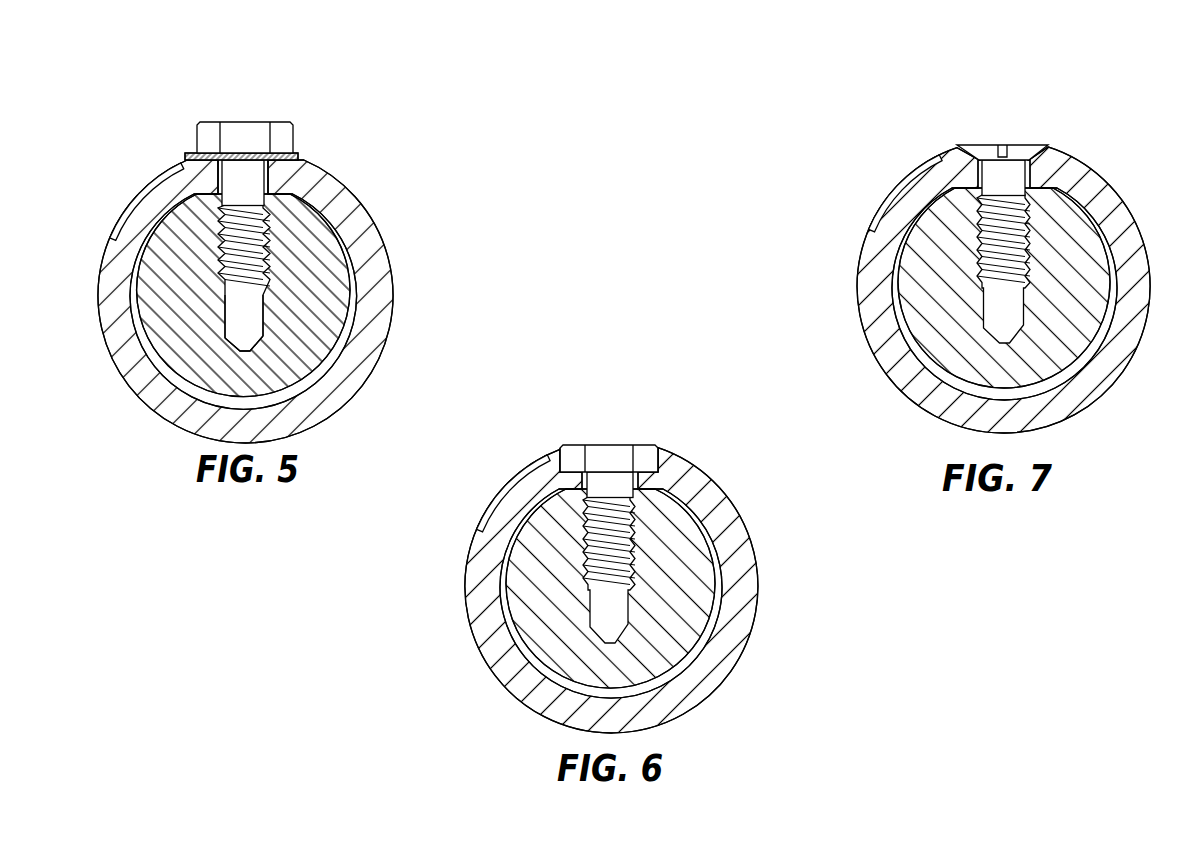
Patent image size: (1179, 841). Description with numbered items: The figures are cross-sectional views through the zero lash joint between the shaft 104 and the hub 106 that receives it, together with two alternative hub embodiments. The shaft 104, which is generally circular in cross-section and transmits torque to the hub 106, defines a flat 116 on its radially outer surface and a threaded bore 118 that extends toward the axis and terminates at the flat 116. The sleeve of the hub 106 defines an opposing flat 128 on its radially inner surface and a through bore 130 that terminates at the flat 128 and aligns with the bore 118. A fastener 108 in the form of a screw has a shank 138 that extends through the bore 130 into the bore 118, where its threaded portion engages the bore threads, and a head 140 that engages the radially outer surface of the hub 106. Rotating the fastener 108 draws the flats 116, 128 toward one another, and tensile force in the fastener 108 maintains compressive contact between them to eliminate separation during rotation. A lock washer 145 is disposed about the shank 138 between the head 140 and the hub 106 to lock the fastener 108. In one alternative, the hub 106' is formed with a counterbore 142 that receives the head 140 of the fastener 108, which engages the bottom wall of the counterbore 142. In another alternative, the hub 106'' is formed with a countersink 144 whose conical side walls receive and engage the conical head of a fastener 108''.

In FIG. 5, the shaft 104 is at (307, 333).
In FIG. 6, the shaft 104 is at (535, 637).
In FIG. 7, the shaft 104 is at (930, 332).
In FIG. 5, the hub 106 is at (283, 301).
In FIG. 6, the hub 106' is at (597, 590).
In FIG. 7, the hub 106'' is at (996, 296).
In FIG. 5, the fastener 108 is at (286, 233).
In FIG. 6, the fastener 108 is at (662, 542).
In FIG. 7, the fastener 108'' is at (1051, 240).
In FIG. 5, the flat 116 is at (282, 178).
In FIG. 5, the threaded bore 118 is at (239, 306).
In FIG. 5, the flat 128 is at (217, 198).
In FIG. 5, the through bore 130 is at (176, 158).
In FIG. 5, the shank 138 is at (250, 232).
In FIG. 5, the head 140 is at (252, 128).
In FIG. 6, the head 140 is at (617, 444).
In FIG. 6, the counterbore 142 is at (565, 446).
In FIG. 7, the countersink 144 is at (986, 144).
In FIG. 5, the lock washer 145 is at (190, 158).